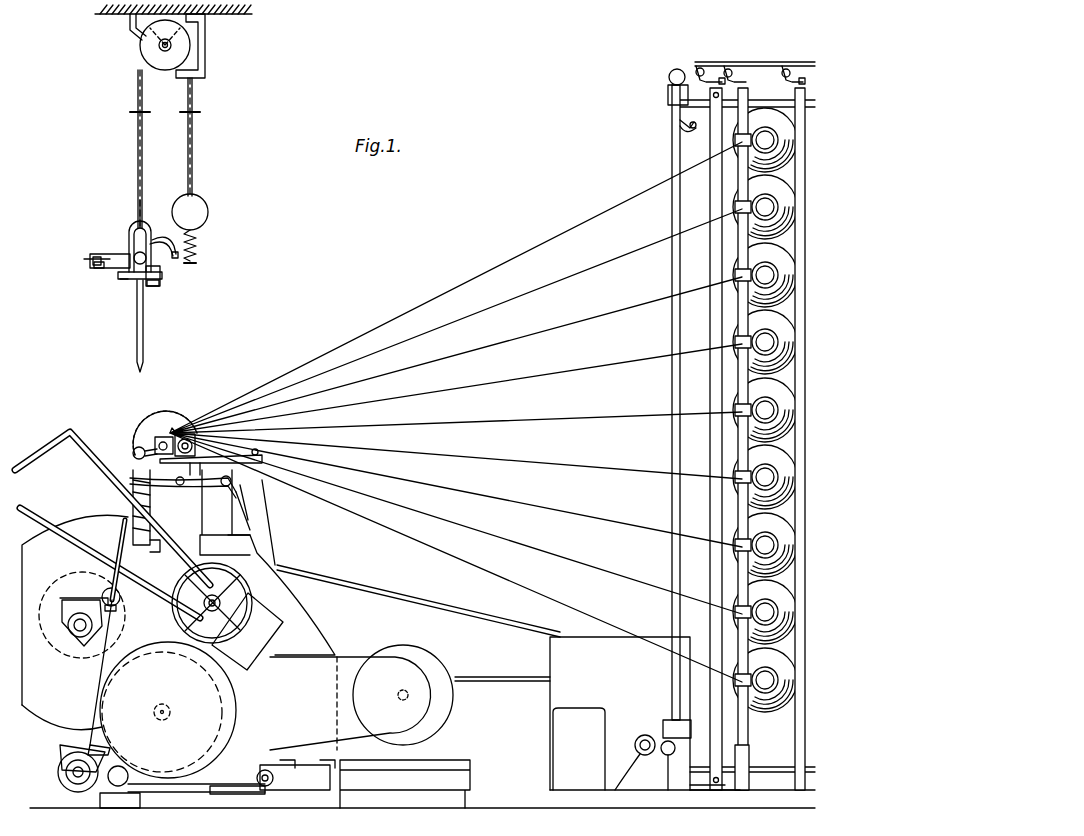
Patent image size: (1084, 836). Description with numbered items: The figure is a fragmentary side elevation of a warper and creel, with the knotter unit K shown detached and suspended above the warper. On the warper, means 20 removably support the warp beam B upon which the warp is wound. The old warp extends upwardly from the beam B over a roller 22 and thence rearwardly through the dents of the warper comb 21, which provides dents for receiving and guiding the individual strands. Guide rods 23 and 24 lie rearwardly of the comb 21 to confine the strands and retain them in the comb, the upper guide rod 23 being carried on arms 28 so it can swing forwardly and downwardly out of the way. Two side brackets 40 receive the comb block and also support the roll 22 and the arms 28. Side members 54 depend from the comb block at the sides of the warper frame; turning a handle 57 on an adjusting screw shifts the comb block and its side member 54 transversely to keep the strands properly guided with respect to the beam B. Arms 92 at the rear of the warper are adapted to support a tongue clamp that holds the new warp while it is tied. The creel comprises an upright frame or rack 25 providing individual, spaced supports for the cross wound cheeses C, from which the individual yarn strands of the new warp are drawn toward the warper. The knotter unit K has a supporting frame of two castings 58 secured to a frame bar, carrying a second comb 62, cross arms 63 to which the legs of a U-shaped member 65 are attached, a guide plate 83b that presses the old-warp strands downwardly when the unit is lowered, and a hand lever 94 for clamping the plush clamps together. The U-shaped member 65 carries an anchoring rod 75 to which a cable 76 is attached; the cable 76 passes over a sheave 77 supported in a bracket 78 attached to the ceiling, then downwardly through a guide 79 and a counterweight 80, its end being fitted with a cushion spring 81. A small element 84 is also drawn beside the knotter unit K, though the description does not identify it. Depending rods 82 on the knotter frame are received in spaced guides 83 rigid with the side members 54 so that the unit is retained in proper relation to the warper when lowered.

The bracket 78 is at (135, 32).
The sheaves 77 is at (142, 44).
The guides 79 is at (204, 72).
The cables 76 is at (136, 147).
The anchoring rods 75 is at (136, 203).
The U-shaped member 65 is at (145, 250).
The second comb 62 is at (128, 238).
The counterweights 80 is at (208, 213).
The cushion springs 81 is at (198, 246).
The wire 84 is at (180, 258).
The guide plate 83b is at (162, 284).
The cross arms 63 is at (158, 288).
The depending rods 82 is at (144, 328).
The hand lever 94 is at (86, 258).
The castings 58 is at (102, 270).
The knotter unit K is at (123, 293).
The upright frame or rack 25 is at (669, 140).
The cheeses C is at (768, 120).
The guide rod 24 is at (256, 392).
The upper guide rod 23 is at (190, 430).
The comb 21 is at (178, 432).
The handle 57 is at (170, 430).
The arms 28 is at (150, 420).
The roller 22 is at (137, 445).
The arms 92 is at (258, 465).
The side brackets 40 is at (215, 505).
The side members 54 is at (135, 503).
The guides 83 is at (130, 470).
The means removably supporting the warp beam 20 is at (97, 584).
The warp beam B is at (52, 712).